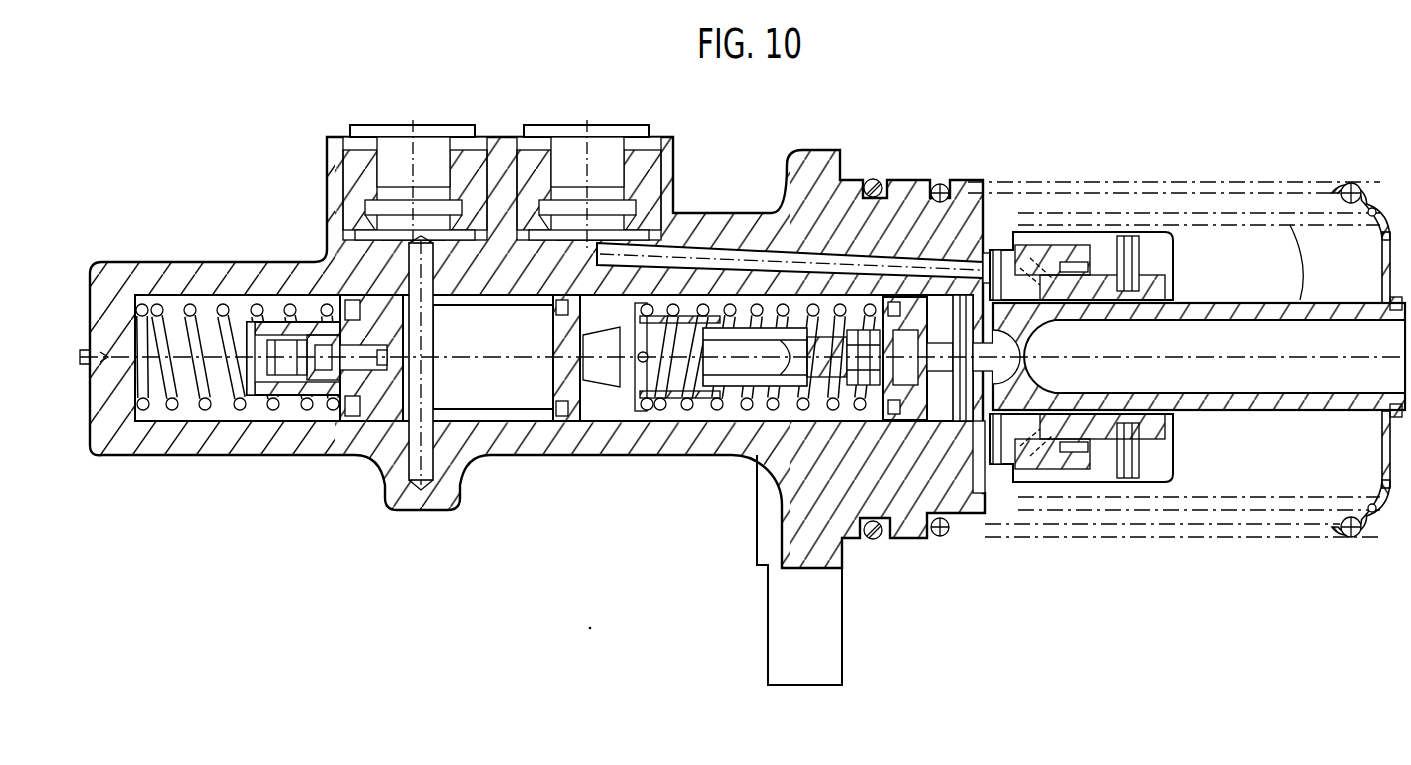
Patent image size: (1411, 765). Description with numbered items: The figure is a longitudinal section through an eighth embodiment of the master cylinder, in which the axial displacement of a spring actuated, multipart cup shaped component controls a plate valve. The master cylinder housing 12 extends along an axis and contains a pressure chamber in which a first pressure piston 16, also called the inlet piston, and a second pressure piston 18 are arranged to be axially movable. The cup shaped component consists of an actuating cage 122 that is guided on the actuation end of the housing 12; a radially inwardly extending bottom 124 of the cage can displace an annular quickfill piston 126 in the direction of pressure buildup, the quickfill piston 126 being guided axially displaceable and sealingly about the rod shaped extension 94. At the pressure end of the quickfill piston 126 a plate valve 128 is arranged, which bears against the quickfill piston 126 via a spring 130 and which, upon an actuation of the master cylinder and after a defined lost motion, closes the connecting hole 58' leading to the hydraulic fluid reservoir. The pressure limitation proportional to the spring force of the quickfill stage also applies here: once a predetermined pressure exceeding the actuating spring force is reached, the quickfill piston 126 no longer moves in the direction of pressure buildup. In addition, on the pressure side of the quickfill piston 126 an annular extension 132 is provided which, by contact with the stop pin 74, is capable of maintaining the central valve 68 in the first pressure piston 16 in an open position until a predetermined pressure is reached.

The housing 12 is at (798, 510).
The first pressure piston 16 is at (940, 400).
The second pressure piston 18 is at (330, 415).
The connecting hole 58' is at (790, 199).
The central valve 68 is at (1050, 343).
The stop pin 74 is at (1000, 365).
The rod shaped extension 94 is at (1300, 305).
The actuating cage 122 is at (1110, 497).
The bottom 124 is at (1172, 455).
The quickfill piston 126 is at (1062, 460).
The plate valve 128 is at (978, 250).
The spring 130 is at (1012, 272).
The annular extension 132 is at (988, 430).